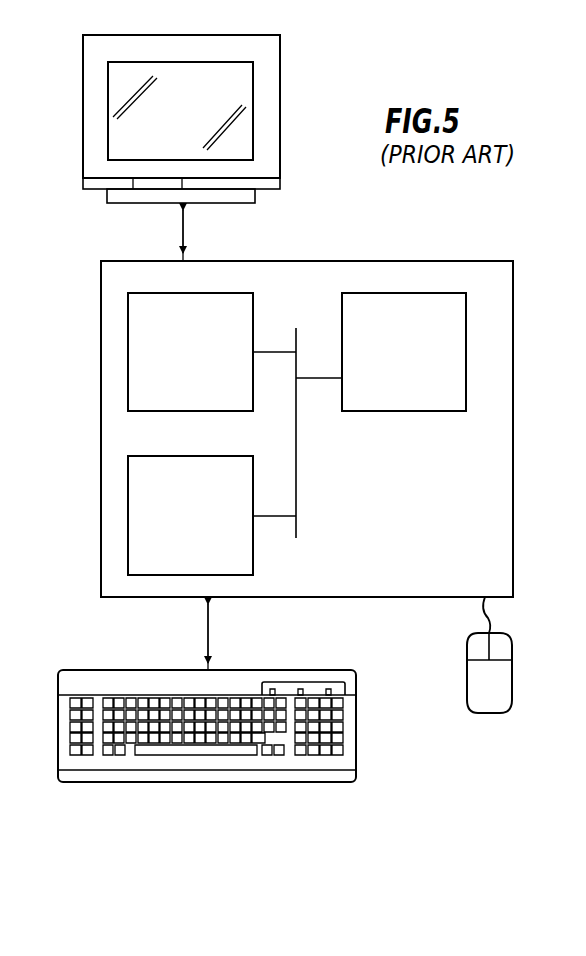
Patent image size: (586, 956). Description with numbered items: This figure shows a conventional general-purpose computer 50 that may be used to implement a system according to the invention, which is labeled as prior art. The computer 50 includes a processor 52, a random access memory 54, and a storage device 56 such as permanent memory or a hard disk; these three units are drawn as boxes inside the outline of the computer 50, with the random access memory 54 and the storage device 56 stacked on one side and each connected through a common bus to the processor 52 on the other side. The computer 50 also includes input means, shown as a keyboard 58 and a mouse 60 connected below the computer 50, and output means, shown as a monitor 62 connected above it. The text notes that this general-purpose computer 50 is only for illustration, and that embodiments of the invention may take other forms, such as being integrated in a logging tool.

The computer 50 is at (514, 337).
The processor 52 is at (417, 362).
The random access memory 54 is at (204, 362).
The storage device 56 is at (204, 528).
The keyboard 58 is at (127, 784).
The mouse 60 is at (476, 695).
The monitor 62 is at (193, 127).